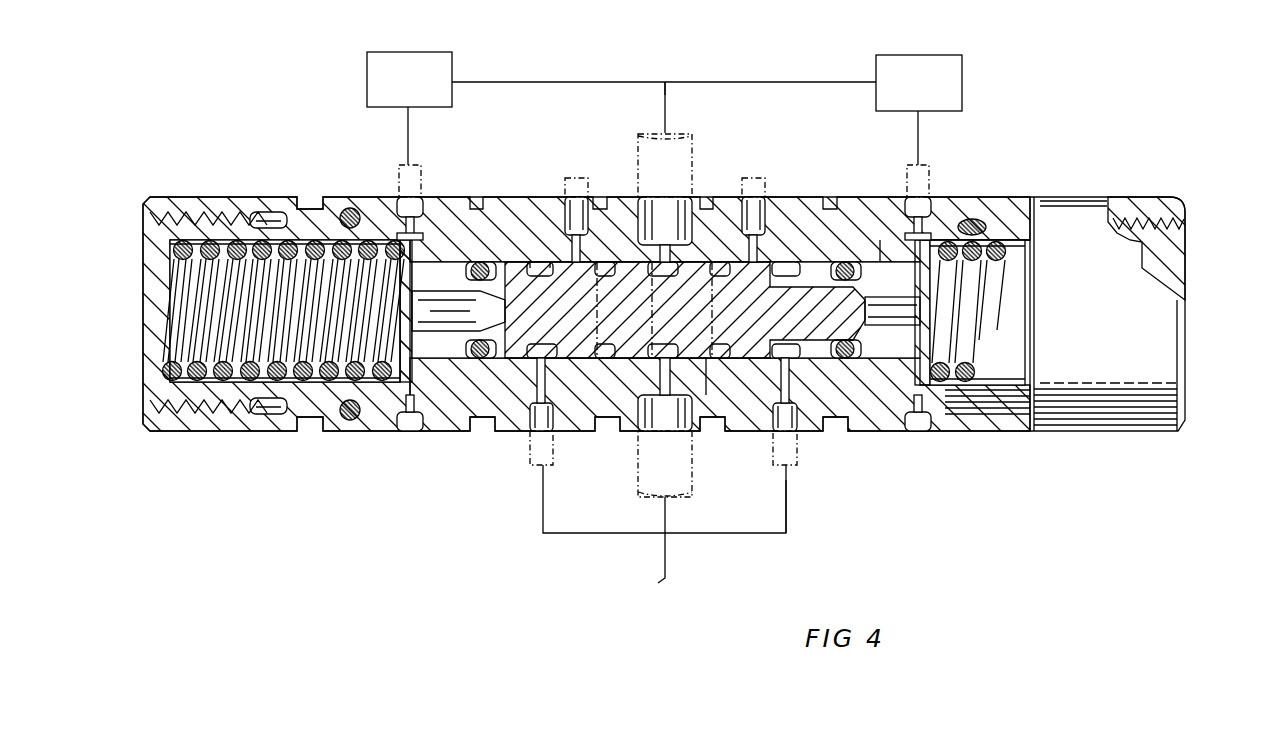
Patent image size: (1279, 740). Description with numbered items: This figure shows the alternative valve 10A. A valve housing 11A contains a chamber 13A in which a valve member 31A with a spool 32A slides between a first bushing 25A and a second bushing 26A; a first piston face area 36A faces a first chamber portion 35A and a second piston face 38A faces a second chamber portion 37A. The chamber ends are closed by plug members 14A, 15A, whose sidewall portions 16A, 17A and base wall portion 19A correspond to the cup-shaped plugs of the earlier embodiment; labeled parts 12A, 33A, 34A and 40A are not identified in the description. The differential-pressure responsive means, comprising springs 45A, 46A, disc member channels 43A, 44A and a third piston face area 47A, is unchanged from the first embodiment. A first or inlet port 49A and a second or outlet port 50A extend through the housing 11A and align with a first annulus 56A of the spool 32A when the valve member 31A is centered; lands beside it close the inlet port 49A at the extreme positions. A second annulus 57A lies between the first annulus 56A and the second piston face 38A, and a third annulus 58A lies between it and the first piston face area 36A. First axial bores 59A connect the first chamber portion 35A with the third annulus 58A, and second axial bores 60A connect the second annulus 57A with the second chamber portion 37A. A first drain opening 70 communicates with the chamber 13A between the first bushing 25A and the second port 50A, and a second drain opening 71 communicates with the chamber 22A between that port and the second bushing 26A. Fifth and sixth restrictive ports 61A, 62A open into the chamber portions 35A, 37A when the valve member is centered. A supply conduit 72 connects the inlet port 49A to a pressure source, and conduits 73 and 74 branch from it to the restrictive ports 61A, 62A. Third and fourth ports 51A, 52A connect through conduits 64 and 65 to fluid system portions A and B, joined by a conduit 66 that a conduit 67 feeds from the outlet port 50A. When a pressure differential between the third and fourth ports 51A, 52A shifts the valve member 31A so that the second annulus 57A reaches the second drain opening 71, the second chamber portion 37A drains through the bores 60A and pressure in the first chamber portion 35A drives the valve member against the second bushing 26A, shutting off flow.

The valve 10A is at (968, 480).
The valve housing 11A is at (358, 435).
The seal rings 12A is at (420, 442).
The valve housing chamber 13A is at (822, 413).
The left end cap 14A is at (143, 258).
The right end cap 15A is at (1188, 236).
The spring 16A is at (305, 214).
The spring / bearing stack 17A is at (1003, 234).
The end cap wall 19A is at (1186, 266).
The chamber 22A is at (525, 420).
The first bushing 25A is at (500, 372).
The second bushing 26A is at (822, 382).
The valve member 31A is at (620, 417).
The valve spool 32A is at (708, 417).
The passage 33A is at (512, 240).
The passage 34A is at (870, 282).
The first chamber portion 35A is at (541, 280).
The first piston face area 36A is at (566, 360).
The second chamber portion 37A is at (783, 260).
The second piston face 38A is at (776, 366).
The spring seat plate 40A is at (1027, 249).
The disc member channel 43A is at (430, 298).
The disc member channel 44A is at (930, 326).
The spring 45A is at (300, 396).
The spring 46A is at (1020, 287).
The third piston face area 47A is at (437, 363).
The first or inlet port 49A is at (663, 400).
The second or outlet port 50A is at (672, 260).
The third port 51A is at (418, 197).
The fourth port 52A is at (928, 197).
The first annulus 56A is at (660, 260).
The second annulus 57A is at (720, 260).
The third annulus 58A is at (607, 245).
The first axial bores 59A is at (592, 280).
The second axial bores 60A is at (752, 282).
The fifth restrictive port 61A is at (568, 425).
The sixth restrictive port 62A is at (757, 400).
The conduit 64 is at (406, 128).
The conduit 65 is at (916, 128).
The conduit 66 is at (780, 82).
The conduit 67 is at (668, 100).
The first drain opening 70 is at (583, 232).
The second drain opening 71 is at (751, 236).
The conduit 72 is at (667, 555).
The conduit 73 is at (543, 511).
The conduit 74 is at (786, 516).